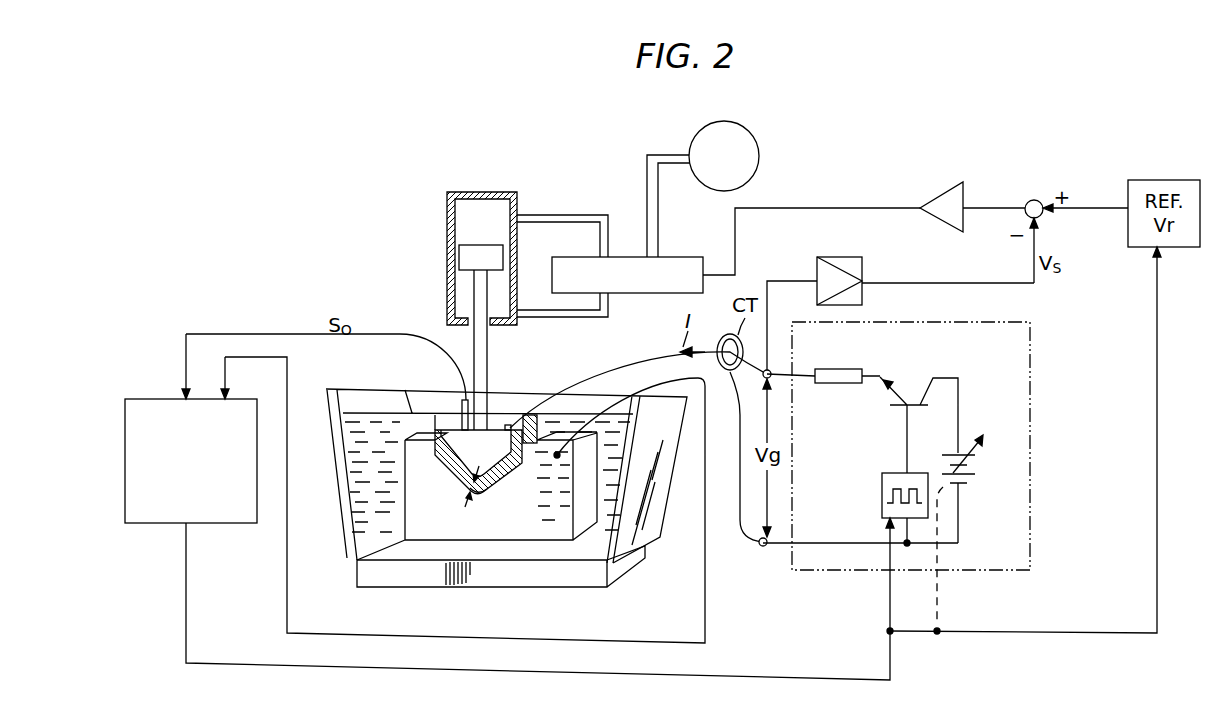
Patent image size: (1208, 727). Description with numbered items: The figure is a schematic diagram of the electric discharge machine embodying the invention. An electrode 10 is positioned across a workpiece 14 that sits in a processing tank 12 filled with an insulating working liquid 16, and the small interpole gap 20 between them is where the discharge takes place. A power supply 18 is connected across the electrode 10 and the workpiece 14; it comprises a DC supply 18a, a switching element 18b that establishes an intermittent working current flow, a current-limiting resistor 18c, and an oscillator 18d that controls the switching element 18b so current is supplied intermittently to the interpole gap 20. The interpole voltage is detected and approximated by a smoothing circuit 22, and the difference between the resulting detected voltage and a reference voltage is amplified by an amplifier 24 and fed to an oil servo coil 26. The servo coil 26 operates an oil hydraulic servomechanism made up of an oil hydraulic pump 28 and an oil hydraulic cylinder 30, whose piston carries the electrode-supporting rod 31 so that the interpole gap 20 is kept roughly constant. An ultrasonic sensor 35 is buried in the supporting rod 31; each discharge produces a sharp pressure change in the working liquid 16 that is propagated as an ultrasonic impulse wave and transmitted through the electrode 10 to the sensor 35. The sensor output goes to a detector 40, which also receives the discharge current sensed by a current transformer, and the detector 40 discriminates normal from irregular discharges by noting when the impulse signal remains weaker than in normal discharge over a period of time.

The electrode 10 is at (446, 430).
The processing tank 12 is at (329, 487).
The workpiece 14 is at (530, 540).
The insulating working liquid 16 is at (356, 412).
The power supply 18 is at (1030, 515).
The DC supply 18a is at (975, 438).
The switching element 18b is at (925, 390).
The current-limiting resistor 18c is at (846, 369).
The oscillator 18d is at (882, 475).
The interpole gap 20 is at (480, 496).
The smoothing circuit 22 is at (855, 257).
The amplifier 24 is at (935, 197).
The oil servo coil 26 is at (634, 293).
The oil hydraulic pump 28 is at (697, 130).
The oil hydraulic cylinder 30 is at (472, 192).
The electrode-supporting rod 31 is at (488, 348).
The ultrasonic sensor 35 is at (470, 405).
The detector 40 is at (125, 449).